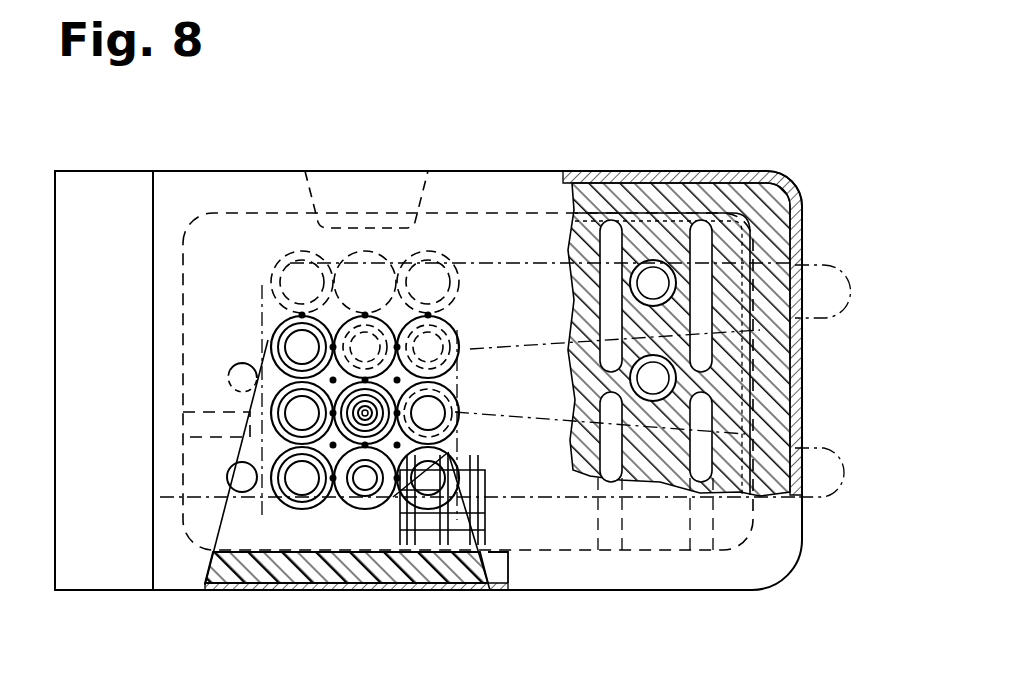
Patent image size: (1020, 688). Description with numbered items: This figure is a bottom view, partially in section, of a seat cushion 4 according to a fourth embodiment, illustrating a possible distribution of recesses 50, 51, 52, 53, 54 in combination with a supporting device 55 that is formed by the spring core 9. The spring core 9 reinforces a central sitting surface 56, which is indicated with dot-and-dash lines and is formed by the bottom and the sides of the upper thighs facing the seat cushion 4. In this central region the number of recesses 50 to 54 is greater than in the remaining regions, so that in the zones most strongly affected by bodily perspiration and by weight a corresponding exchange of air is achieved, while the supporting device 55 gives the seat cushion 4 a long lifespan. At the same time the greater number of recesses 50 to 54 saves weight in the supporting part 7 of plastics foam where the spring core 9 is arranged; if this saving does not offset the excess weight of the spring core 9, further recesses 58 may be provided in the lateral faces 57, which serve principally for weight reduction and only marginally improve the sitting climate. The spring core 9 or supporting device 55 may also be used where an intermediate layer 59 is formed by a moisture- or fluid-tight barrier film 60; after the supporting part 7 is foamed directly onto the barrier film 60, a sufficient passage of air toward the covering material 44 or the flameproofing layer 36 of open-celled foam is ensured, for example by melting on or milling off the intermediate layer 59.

The seat cushion 4 is at (790, 104).
The supporting part 7 is at (679, 371).
The spring core 9 is at (303, 512).
The flameproofing layer 36 is at (793, 214).
The covering material 44 is at (800, 222).
The recess 50 is at (240, 478).
The recess 51 is at (707, 226).
The recess 52 is at (300, 346).
The recess 53 is at (364, 500).
The recess 54 is at (297, 408).
The supporting device 55 is at (268, 506).
The central sitting surface 56 is at (405, 316).
The lateral face 57 is at (240, 168).
The recess 58 is at (352, 226).
The intermediate layer 59 is at (428, 553).
The barrier film 60 is at (470, 592).